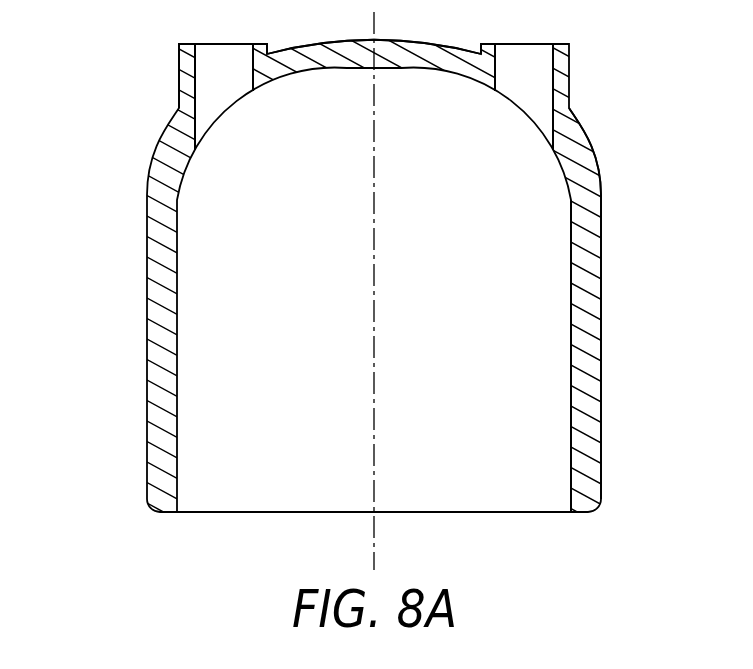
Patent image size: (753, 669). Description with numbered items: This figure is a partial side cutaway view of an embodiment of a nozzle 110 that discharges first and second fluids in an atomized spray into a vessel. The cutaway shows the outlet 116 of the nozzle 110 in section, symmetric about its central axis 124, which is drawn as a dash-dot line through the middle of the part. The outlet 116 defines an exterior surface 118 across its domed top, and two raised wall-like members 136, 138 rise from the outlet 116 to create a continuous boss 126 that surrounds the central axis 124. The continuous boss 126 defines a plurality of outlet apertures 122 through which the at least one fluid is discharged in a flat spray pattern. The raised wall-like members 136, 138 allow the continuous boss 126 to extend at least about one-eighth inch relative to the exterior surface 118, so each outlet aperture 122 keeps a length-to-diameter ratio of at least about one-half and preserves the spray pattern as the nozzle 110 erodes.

The nozzle 110 is at (99, 139).
The outlet 116 is at (592, 222).
The exterior surface 118 is at (432, 47).
The outlet apertures 122 is at (549, 58).
The central axis 124 is at (374, 292).
The continuous boss 126 is at (486, 44).
The raised wall-like member 136 is at (187, 43).
The raised wall-like member 138 is at (263, 43).